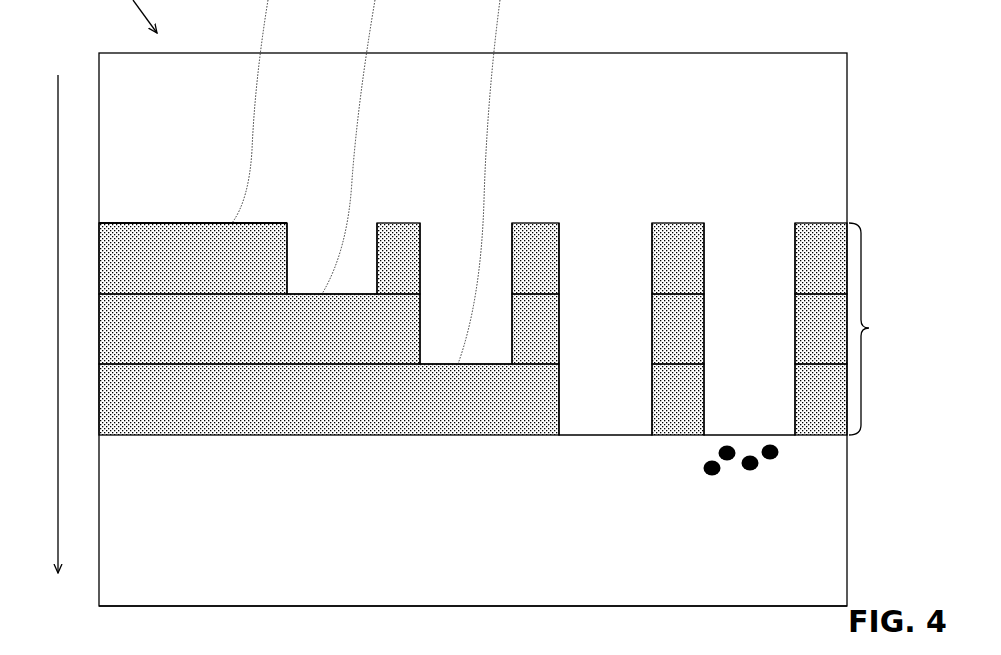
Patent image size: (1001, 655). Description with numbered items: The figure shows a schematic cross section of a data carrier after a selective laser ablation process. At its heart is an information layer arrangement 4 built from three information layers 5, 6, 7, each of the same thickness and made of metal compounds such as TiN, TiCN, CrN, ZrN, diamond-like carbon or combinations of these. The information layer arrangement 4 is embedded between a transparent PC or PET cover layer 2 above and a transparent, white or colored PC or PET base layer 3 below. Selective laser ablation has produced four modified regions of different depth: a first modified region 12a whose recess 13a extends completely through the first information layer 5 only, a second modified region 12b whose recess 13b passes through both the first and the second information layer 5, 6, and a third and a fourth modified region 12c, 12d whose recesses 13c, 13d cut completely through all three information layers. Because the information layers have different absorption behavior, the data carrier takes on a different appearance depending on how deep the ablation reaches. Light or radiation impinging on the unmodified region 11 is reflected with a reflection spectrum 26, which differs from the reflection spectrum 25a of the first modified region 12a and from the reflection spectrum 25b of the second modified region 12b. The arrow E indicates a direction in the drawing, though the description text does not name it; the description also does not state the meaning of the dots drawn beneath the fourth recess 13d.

The cover layer 2 is at (828, 95).
The base layer 3 is at (836, 527).
The information layer arrangement 4 is at (869, 328).
The first information layer 5 is at (114, 260).
The second information layer 6 is at (112, 330).
The third information layer 7 is at (114, 400).
The unmodified region 11 is at (212, 208).
The first modified region 12a is at (332, 258).
The second modified region 12b is at (466, 293).
The third modified region 12c is at (605, 329).
The fourth modified region 12d is at (749, 329).
The recess 13a is at (313, 222).
The recess 13b is at (443, 222).
The recess 13c is at (602, 222).
The recess 13d is at (750, 222).
The reflection spectrum 25a is at (352, 86).
The reflection spectrum 25b is at (490, 86).
The reflection spectrum 26 is at (258, 84).
The etch direction E is at (58, 155).